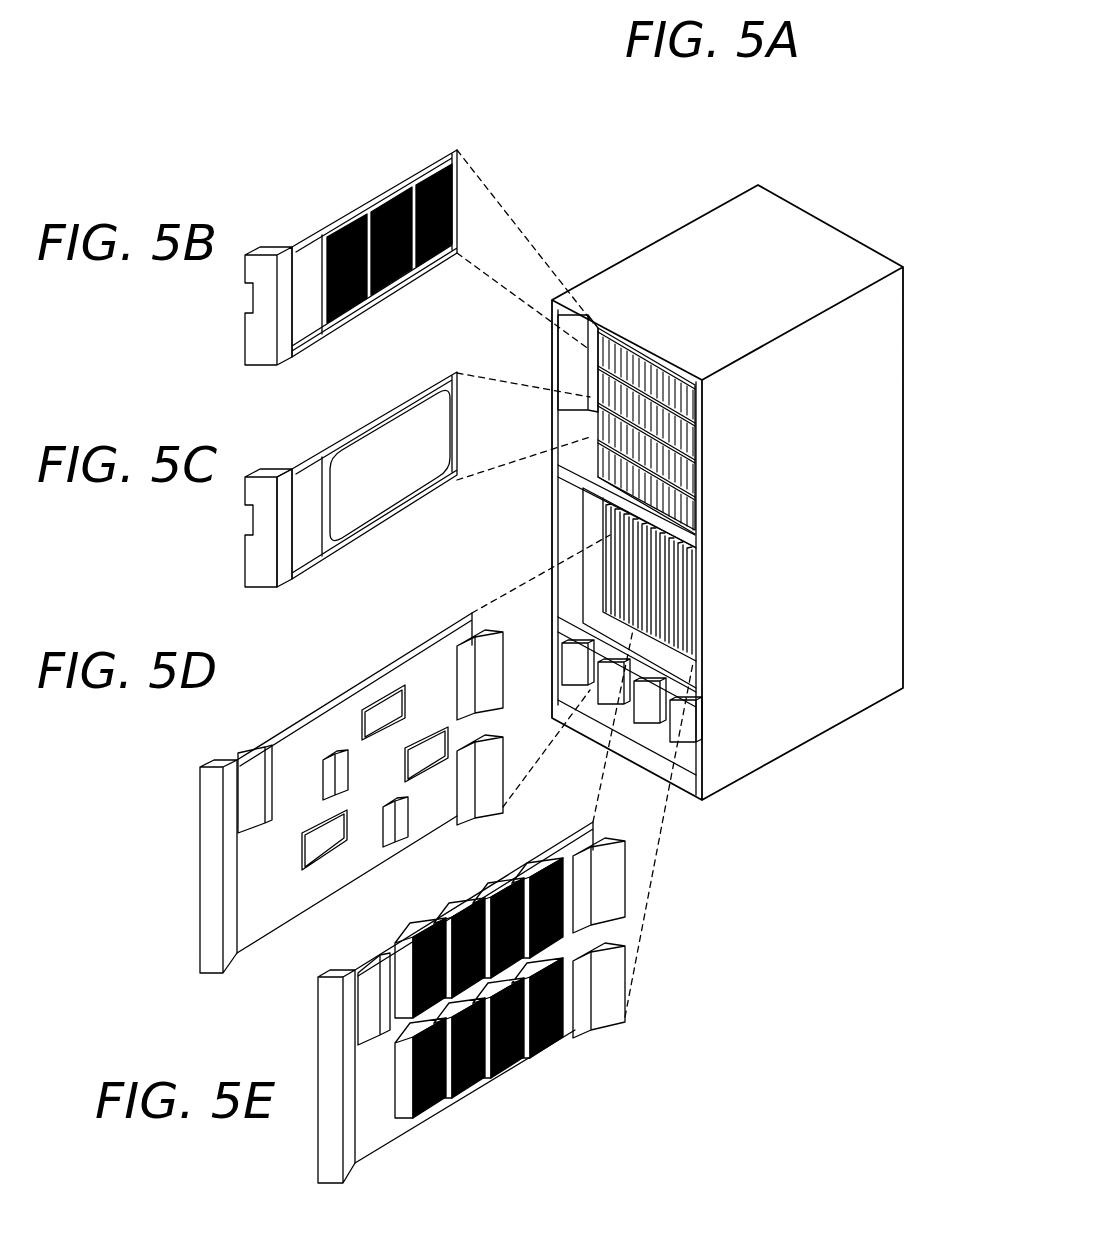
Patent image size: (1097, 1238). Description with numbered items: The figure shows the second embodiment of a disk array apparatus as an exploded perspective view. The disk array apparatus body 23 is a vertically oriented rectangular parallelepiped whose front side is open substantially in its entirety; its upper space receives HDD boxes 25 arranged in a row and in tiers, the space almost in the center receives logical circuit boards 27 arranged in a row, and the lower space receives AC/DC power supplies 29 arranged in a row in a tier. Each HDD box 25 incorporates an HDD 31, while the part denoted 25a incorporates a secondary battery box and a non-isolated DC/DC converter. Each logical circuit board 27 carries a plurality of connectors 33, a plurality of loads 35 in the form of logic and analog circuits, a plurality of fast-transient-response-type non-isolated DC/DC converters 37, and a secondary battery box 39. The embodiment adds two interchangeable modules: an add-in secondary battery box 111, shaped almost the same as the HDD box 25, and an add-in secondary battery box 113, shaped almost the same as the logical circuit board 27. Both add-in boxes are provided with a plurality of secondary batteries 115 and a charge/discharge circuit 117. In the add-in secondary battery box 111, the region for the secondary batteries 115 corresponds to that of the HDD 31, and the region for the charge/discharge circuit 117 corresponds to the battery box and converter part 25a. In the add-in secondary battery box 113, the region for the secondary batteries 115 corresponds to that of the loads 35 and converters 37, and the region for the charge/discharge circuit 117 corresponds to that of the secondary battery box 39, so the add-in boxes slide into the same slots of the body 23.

In FIG. 5A, the disk array apparatus body 23 is at (727, 185).
In FIG. 5C, the HDD box 25 is at (358, 425).
In FIG. 5C, the secondary battery box and non-isolated DC/DC converter part 25a is at (303, 487).
In FIG. 5D, the logical circuit board 27 is at (303, 722).
In FIG. 5A, the AC/DC power supply 29 is at (692, 728).
In FIG. 5C, the HDD 31 is at (410, 425).
In FIG. 5D, the connector 33 is at (493, 665).
In FIG. 5E, the connector 33 is at (612, 897).
In FIG. 5D, the load 35 is at (377, 710).
In FIG. 5D, the fast-transient-response-type non-isolated DC/DC converter 37 is at (403, 828).
In FIG. 5D, the secondary battery box 39 is at (252, 773).
In FIG. 5B, the add-in secondary battery box 111 is at (433, 152).
In FIG. 5E, the add-in secondary battery box 113 is at (390, 1130).
In FIG. 5B, the secondary battery 115 is at (348, 210).
In FIG. 5E, the secondary battery 115 is at (432, 937).
In FIG. 5B, the charge/discharge circuit 117 is at (302, 262).
In FIG. 5E, the charge/discharge circuit 117 is at (372, 1015).